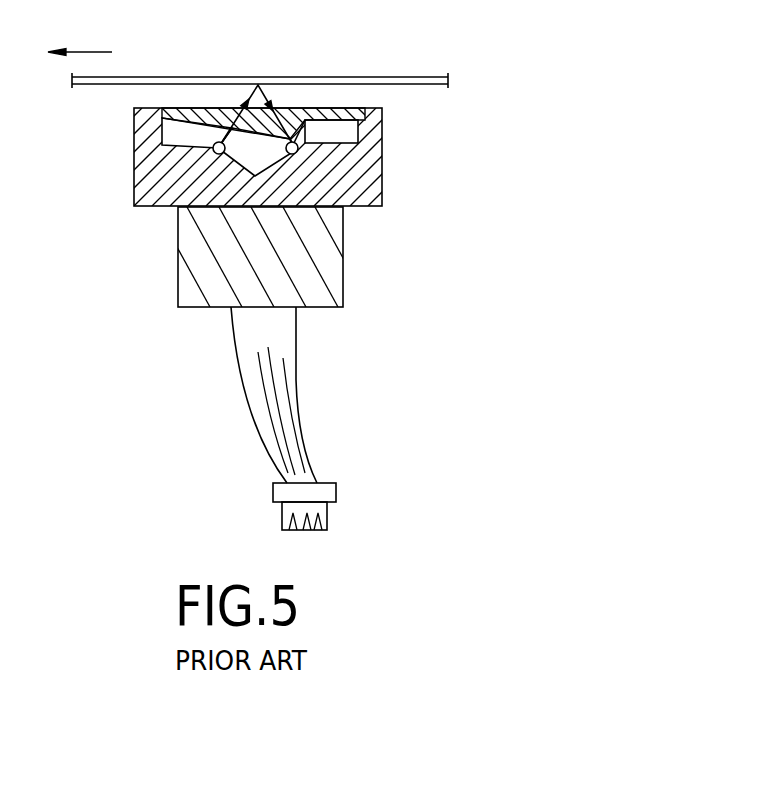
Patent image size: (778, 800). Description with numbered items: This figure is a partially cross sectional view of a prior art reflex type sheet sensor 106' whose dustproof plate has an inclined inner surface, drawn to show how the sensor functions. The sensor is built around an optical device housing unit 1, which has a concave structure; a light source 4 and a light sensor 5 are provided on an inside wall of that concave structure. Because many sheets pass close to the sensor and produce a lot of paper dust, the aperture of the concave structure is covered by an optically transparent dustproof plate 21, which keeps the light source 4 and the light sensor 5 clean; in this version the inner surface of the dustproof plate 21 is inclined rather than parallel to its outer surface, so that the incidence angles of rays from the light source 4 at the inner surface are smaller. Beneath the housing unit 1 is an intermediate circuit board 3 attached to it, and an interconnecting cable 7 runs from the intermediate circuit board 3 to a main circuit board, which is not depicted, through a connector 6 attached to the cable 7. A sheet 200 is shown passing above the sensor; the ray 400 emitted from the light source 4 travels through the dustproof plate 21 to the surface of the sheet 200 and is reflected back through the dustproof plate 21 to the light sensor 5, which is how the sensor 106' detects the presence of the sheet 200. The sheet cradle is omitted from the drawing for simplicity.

The optical device housing unit 1 is at (134, 167).
The intermediate circuit board 3 is at (343, 288).
The light source 4 is at (214, 152).
The light sensor 5 is at (296, 152).
The connector 6 is at (258, 514).
The interconnecting cable 7 is at (303, 425).
The dustproof plate 21 is at (192, 112).
The reflex type sheet sensor 106' is at (516, 159).
The sheet 200 is at (362, 76).
The ray 400 is at (284, 142).